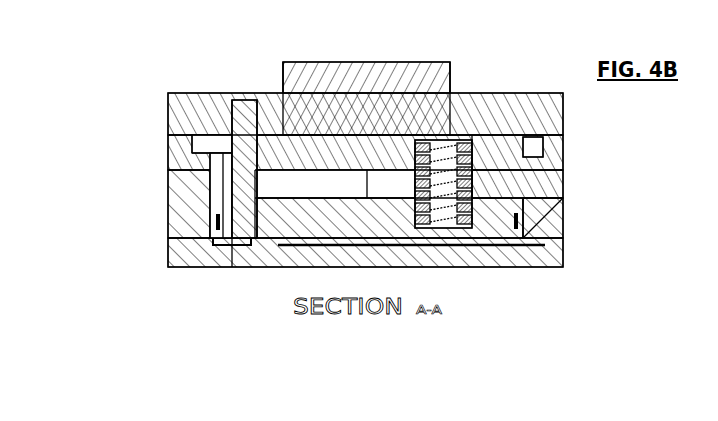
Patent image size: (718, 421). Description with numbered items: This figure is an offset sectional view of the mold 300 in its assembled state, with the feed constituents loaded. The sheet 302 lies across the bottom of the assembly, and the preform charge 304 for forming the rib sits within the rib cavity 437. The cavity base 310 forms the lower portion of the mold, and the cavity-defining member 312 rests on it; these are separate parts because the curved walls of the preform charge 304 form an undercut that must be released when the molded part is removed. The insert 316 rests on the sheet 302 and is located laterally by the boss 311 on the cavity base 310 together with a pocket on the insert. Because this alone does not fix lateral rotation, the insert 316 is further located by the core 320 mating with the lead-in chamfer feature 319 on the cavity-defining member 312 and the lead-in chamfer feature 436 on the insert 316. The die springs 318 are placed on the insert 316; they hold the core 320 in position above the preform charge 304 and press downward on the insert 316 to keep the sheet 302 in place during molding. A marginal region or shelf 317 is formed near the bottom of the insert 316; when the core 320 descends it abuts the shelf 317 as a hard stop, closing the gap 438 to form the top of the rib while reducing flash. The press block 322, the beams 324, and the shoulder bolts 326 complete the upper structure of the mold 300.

The mold 300 is at (100, 85).
The sheet 302 is at (447, 247).
The preform charge 304 is at (517, 226).
The cavity base 310 is at (265, 262).
The boss 311 is at (238, 252).
The cavity-defining member 312 is at (185, 208).
The insert 316 is at (305, 226).
The marginal region or shelf 317 is at (217, 228).
The die springs 318 is at (452, 183).
The lead-in chamfer feature 319 is at (205, 183).
The core 320 is at (292, 157).
The press block 322 is at (327, 92).
The beams 324 is at (503, 107).
The shoulder bolts 326 is at (242, 122).
The lead-in chamfer feature 436 is at (520, 203).
The rib cavity 437 is at (520, 240).
The gap 438 is at (520, 214).